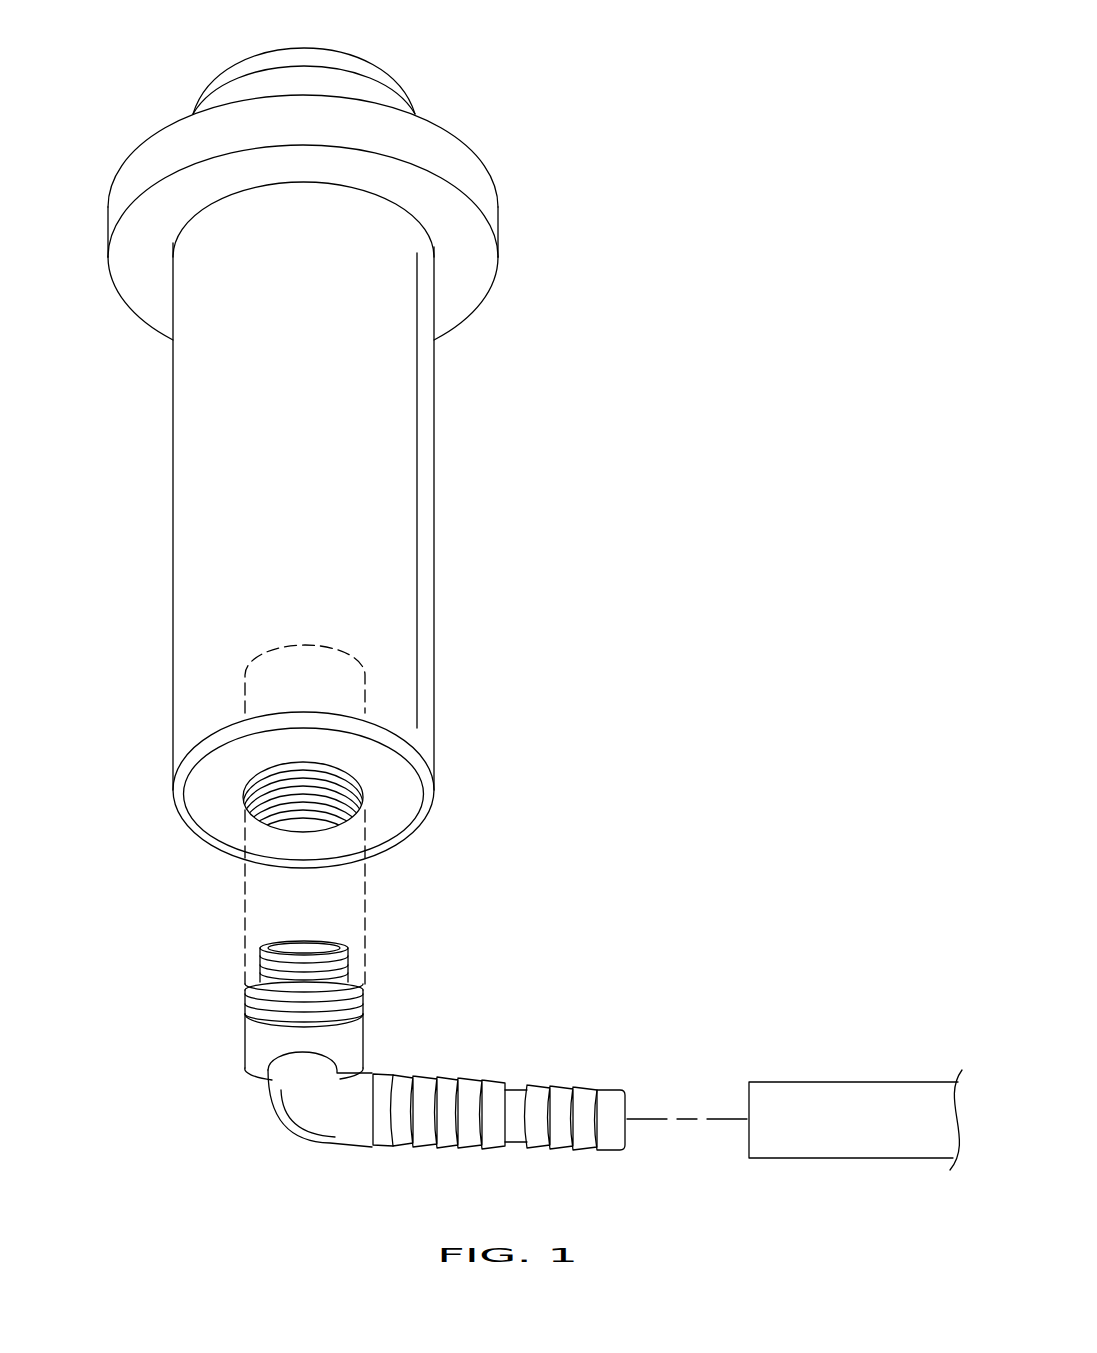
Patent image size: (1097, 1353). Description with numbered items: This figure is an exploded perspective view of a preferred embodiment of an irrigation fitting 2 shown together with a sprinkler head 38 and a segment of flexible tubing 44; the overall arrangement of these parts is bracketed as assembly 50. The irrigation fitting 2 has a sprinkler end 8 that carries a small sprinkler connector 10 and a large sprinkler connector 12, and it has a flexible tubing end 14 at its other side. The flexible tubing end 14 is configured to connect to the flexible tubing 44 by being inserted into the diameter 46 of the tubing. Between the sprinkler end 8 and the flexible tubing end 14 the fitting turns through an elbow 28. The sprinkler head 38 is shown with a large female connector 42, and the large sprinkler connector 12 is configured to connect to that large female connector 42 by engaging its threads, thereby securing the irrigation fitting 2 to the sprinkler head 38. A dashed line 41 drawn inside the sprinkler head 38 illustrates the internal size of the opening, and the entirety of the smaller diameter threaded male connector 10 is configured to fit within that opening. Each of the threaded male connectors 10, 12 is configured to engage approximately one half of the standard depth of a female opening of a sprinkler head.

The irrigation fitting 2 is at (412, 1027).
The sprinkler end 8 is at (326, 992).
The small sprinkler connector 10 is at (313, 953).
The large sprinkler connector 12 is at (255, 1004).
The flexible tubing end 14 is at (498, 1063).
The elbow 28 is at (280, 1110).
The sprinkler head 38 is at (427, 582).
The dashed line 41 is at (308, 643).
The large female connector 42 is at (297, 825).
The flexible tubing 44 is at (835, 1093).
The diameter 46 is at (767, 1105).
The dispenser assembly 50 is at (108, 108).